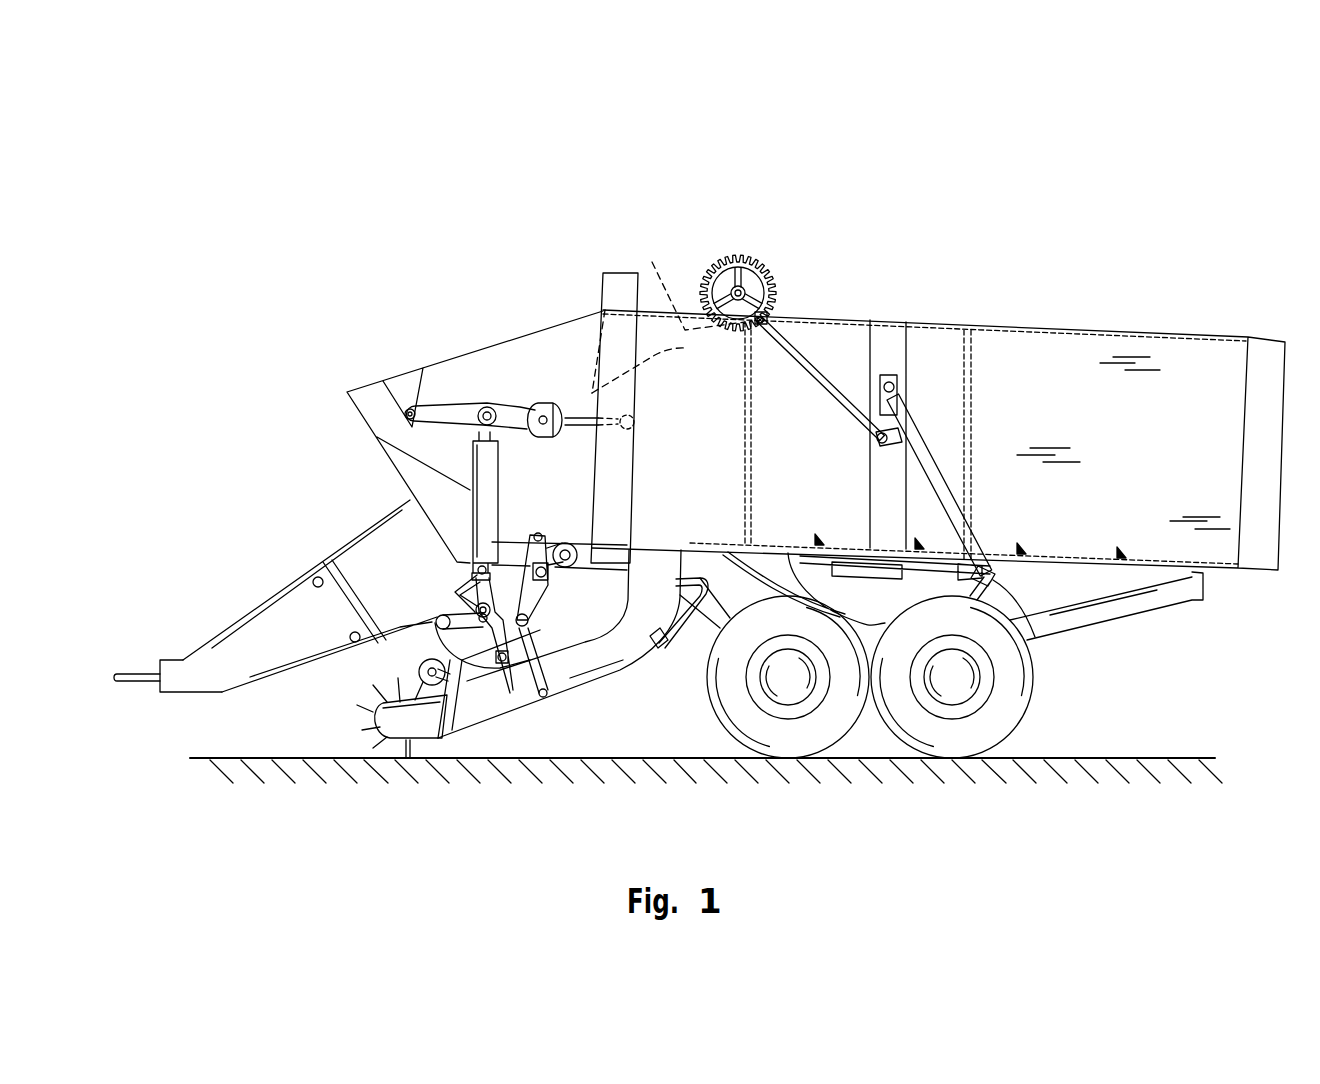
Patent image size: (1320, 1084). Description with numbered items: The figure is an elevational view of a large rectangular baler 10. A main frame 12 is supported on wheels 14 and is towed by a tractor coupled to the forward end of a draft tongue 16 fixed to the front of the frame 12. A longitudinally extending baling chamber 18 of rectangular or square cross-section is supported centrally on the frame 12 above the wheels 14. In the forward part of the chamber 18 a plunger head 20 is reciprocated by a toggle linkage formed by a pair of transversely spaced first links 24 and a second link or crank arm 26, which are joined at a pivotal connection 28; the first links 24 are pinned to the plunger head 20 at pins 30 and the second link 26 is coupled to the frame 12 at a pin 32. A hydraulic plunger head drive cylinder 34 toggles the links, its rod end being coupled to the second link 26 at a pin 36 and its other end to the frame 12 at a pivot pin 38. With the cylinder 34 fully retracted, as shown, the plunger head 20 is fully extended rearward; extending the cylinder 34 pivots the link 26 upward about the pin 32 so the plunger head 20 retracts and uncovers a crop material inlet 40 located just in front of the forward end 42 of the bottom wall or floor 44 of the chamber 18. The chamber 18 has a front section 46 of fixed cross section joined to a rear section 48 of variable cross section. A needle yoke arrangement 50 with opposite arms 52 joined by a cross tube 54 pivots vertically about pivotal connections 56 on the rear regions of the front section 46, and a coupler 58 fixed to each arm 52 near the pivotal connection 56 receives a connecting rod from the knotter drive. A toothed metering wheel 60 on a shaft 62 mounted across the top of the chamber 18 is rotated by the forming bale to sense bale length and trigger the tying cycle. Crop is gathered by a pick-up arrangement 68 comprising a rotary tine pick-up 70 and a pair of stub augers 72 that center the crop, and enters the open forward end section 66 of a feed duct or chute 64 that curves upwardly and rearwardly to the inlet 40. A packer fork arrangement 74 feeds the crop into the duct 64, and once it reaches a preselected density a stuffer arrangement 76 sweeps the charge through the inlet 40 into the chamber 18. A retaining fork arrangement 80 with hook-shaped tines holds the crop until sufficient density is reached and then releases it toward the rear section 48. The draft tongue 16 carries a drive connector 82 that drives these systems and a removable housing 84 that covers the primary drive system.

The large rectangular baler 10 is at (1105, 195).
The main frame 12 is at (400, 403).
The wheels 14 is at (1020, 693).
The draft tongue 16 is at (255, 598).
The baling chamber 18 is at (935, 305).
The plunger head 20 is at (668, 394).
The first links 24 is at (578, 410).
The second link or crank arm 26 is at (518, 405).
The pivotal connection 28 is at (545, 428).
The pins 30 is at (655, 364).
The pin 32 is at (407, 409).
The hydraulic plunger head drive cylinder 34 is at (473, 452).
The pin 36 is at (483, 407).
The pivot pin 38 is at (465, 565).
The crop material inlet 40 is at (660, 540).
The forward end 42 is at (720, 538).
The bottom wall or floor 44 is at (840, 597).
The front section 46 is at (687, 418).
The rear section 48 is at (781, 445).
The needle yoke arrangement 50 is at (940, 442).
The arms 52 is at (978, 540).
The cross tube 54 is at (1035, 628).
The pivotal connections 56 is at (884, 378).
The coupler 58 is at (895, 440).
The toothed metering wheel 60 is at (738, 255).
The shaft 62 is at (744, 289).
The feed duct or chute 64 is at (578, 692).
The open forward end section 66 is at (482, 692).
The pick-up arrangement 68 is at (362, 745).
The rotary tine pick-up 70 is at (355, 715).
The stub augers 72 is at (420, 664).
The packer fork arrangement 74 is at (450, 598).
The stuffer arrangement 76 is at (560, 592).
The retaining fork arrangement 80 is at (685, 640).
The drive connector 82 is at (118, 686).
The removable housing 84 is at (207, 665).